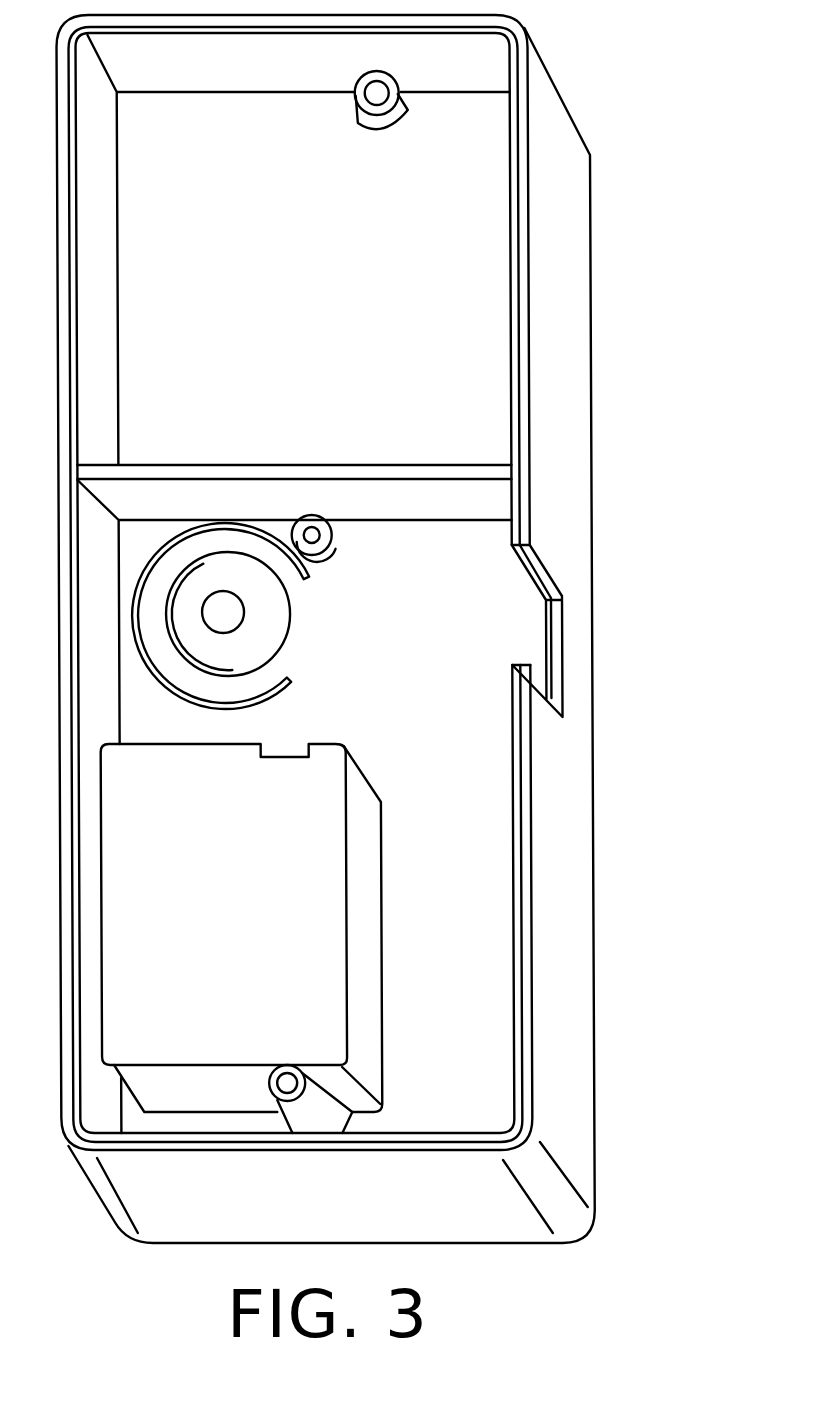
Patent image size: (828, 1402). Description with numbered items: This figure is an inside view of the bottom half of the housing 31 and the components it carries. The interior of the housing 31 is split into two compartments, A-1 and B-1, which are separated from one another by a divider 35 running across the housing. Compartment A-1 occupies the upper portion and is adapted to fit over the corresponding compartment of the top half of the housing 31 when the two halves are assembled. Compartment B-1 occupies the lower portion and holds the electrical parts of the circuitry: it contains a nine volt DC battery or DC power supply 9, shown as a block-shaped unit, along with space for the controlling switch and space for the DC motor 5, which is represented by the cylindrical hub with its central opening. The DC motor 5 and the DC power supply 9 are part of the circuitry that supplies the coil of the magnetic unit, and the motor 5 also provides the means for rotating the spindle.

The housing 31 is at (700, 472).
The divider 35 is at (433, 502).
The DC motor 5 is at (275, 630).
The DC power supply 9 is at (365, 935).
The compartment A-1 is at (295, 343).
The compartment B-1 is at (413, 715).